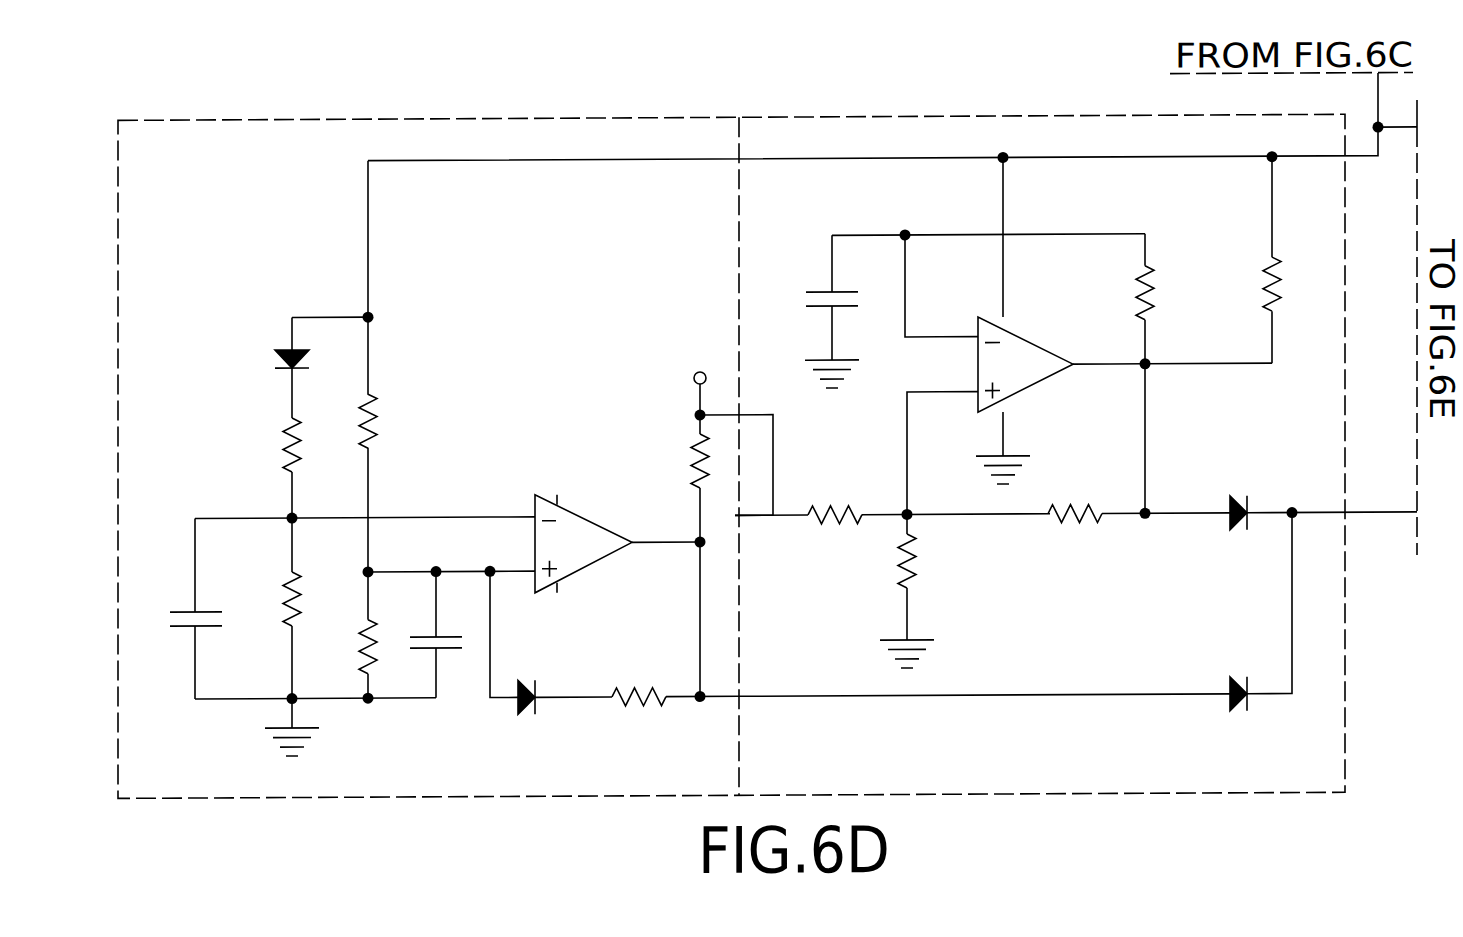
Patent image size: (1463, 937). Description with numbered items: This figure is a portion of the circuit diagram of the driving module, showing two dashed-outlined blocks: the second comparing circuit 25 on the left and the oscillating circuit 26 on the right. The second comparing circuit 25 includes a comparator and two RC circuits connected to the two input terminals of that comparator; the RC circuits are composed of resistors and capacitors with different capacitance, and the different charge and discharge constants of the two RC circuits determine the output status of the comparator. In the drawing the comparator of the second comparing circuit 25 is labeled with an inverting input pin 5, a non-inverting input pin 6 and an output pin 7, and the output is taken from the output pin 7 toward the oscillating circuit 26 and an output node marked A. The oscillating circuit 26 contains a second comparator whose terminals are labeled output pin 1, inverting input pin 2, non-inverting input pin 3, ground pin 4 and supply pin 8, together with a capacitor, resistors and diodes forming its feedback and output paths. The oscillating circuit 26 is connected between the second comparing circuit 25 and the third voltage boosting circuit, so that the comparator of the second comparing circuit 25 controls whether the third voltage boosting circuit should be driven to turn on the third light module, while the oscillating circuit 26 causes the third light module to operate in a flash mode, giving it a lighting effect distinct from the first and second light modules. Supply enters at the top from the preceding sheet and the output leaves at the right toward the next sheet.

The second comparing circuit 25 is at (449, 431).
The oscillating circuit 26 is at (1076, 390).
The U05A output pin 1 is at (1127, 350).
The U05A inverting input pin 2 is at (953, 324).
The U05A non-inverting input pin 3 is at (953, 379).
The U05A ground pin 4 is at (998, 448).
The U05B inverting input pin 5 is at (510, 502).
The U05B non-inverting input pin 6 is at (510, 556).
The U05B output pin 7 is at (669, 531).
The U05A supply pin 8 is at (983, 237).